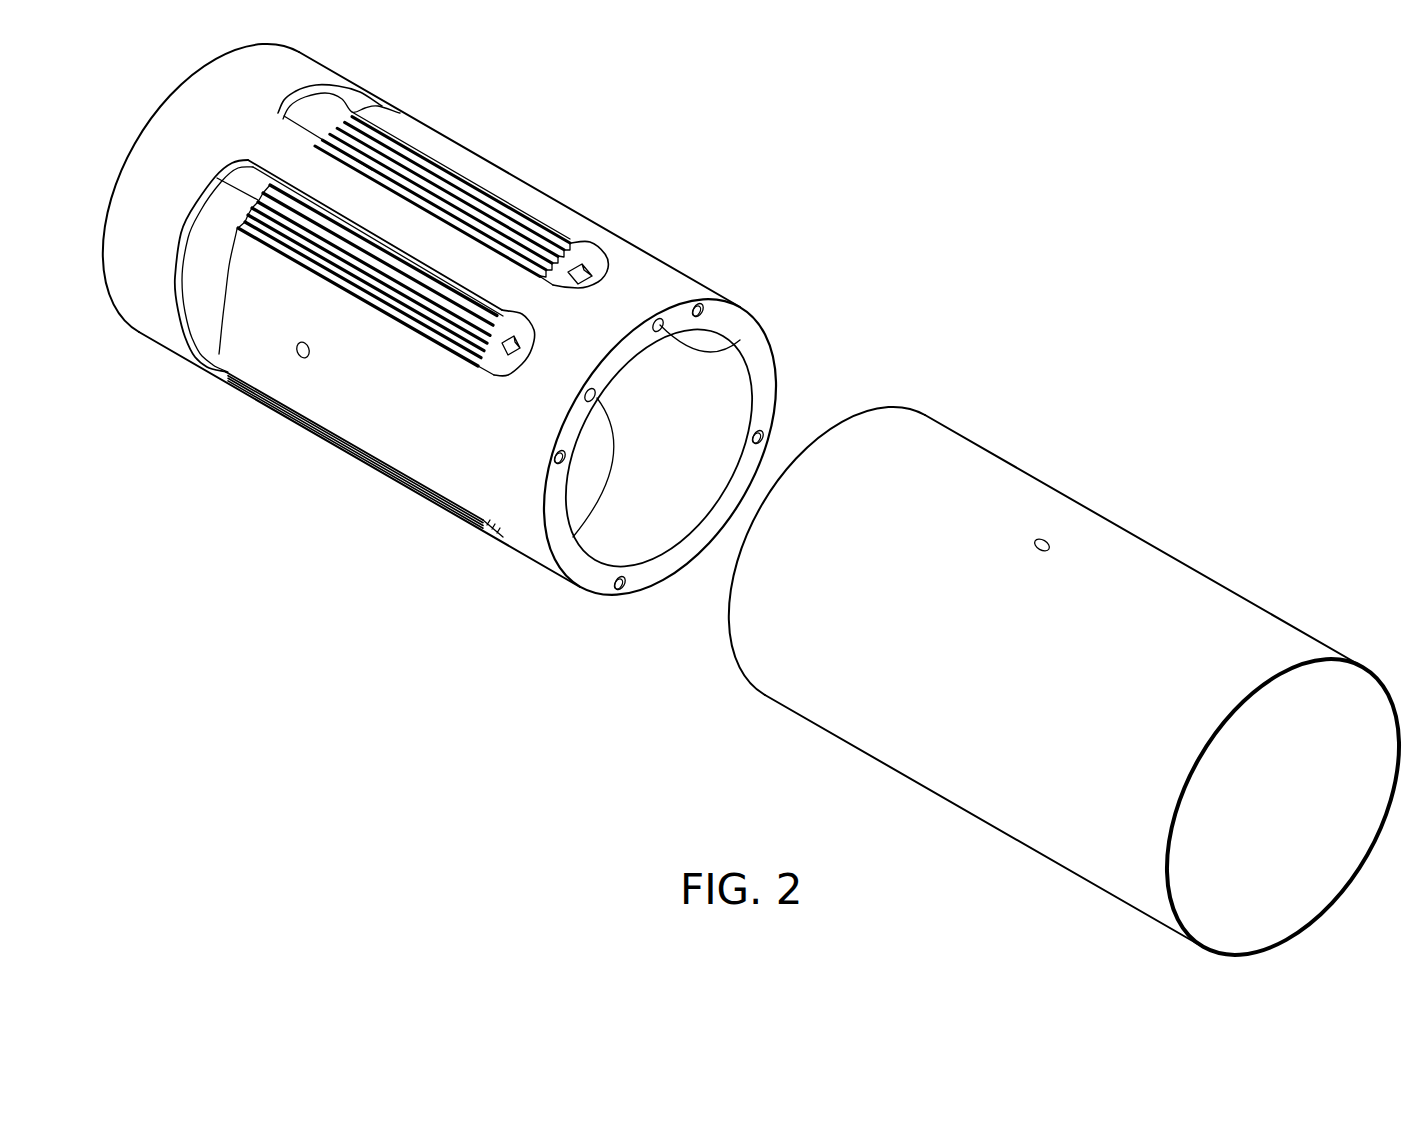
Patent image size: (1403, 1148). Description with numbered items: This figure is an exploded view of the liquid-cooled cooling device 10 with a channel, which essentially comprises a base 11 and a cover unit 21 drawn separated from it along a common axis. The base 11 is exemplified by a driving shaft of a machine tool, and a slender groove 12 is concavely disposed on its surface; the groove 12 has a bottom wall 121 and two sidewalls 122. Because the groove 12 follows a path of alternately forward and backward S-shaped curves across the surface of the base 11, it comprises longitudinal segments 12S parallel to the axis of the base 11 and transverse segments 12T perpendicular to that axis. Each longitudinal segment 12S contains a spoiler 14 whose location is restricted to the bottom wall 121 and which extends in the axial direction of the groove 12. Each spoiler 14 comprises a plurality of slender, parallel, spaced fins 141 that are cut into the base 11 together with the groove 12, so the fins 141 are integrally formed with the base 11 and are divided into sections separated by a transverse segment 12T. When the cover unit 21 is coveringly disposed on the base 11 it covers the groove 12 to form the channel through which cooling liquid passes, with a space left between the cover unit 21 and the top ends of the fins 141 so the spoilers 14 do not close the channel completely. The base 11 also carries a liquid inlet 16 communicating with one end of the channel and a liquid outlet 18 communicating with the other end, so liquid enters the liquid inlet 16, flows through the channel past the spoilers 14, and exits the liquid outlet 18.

The liquid-cooled cooling device 10 is at (900, 290).
The base 11 is at (700, 278).
The groove 12 is at (588, 247).
The longitudinal segments 12S is at (393, 317).
The transverse segments 12T is at (172, 283).
The bottom wall 121 is at (570, 265).
The sidewalls 122 is at (570, 247).
The spoiler 14 is at (462, 170).
The fins 141 is at (400, 157).
The liquid inlet 16 is at (736, 347).
The liquid outlet 18 is at (597, 547).
The cover unit 21 is at (1188, 557).